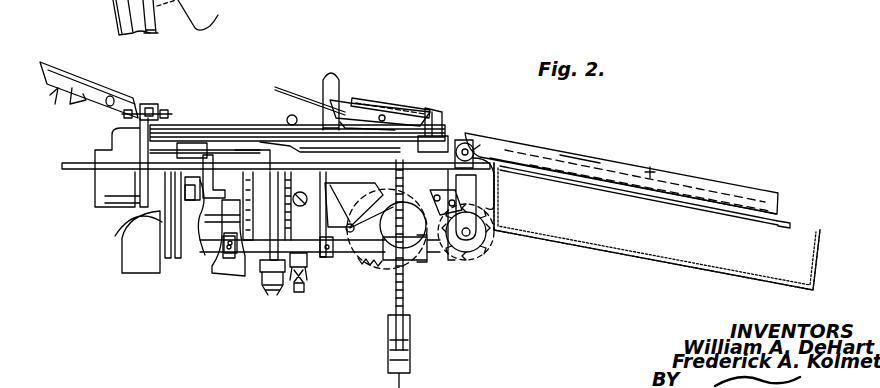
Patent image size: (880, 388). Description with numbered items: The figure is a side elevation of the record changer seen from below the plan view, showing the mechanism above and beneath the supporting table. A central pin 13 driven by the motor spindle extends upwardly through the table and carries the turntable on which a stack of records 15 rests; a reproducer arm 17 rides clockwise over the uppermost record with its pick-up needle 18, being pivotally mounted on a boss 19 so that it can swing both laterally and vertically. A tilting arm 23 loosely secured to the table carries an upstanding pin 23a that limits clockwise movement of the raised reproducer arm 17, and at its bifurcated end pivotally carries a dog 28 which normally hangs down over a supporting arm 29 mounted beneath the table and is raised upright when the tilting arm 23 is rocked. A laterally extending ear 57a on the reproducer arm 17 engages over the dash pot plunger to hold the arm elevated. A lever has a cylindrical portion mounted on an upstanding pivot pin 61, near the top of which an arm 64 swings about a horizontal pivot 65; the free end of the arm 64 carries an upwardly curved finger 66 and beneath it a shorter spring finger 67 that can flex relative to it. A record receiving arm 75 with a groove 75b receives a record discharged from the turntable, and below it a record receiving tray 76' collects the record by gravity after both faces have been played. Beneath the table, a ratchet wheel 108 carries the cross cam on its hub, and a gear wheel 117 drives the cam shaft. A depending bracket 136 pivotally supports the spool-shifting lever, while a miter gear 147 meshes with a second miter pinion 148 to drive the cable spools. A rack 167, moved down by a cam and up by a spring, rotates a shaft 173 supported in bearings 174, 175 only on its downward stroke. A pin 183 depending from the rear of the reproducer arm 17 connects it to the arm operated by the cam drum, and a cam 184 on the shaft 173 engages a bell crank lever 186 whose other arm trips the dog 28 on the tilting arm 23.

The central pin 13 is at (290, 115).
The records 15 is at (208, 125).
The reproducer arm 17 is at (75, 72).
The pick-up needle 18 is at (53, 98).
The boss 19 is at (112, 138).
The tilting arm 23 is at (172, 137).
The upstanding pin 23a is at (150, 170).
The dog 28 is at (210, 155).
The supporting arm 29 is at (246, 258).
The laterally extending ear 57a is at (85, 92).
The upstanding pivot pin 61 is at (448, 138).
The arm 64 is at (402, 108).
The horizontal pivot 65 is at (432, 114).
The upwardly curved finger 66 is at (304, 92).
The spring finger 67 is at (345, 100).
The record receiving arm 75 is at (680, 165).
The groove 75b is at (651, 170).
The record receiving tray 76' is at (657, 232).
The ratchet wheel 108 is at (470, 262).
The gear wheel 117 is at (378, 268).
The depending bracket 136 is at (302, 268).
The miter gear 147 is at (270, 297).
The second miter pinion 148 is at (299, 293).
The rack 167 is at (405, 290).
The shaft 173 is at (272, 280).
The bearing 174 is at (292, 238).
The bearing 175 is at (178, 262).
The pin 183 is at (110, 143).
The cam 184 is at (222, 275).
The bell crank lever 186 is at (200, 262).